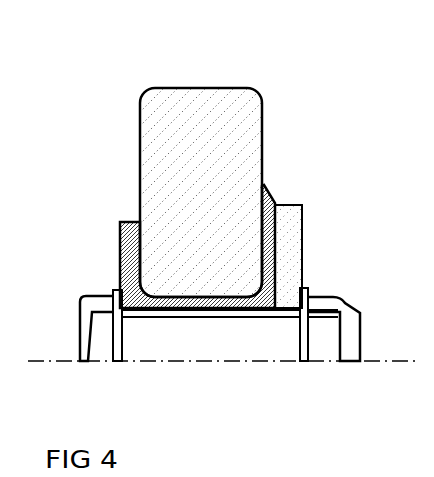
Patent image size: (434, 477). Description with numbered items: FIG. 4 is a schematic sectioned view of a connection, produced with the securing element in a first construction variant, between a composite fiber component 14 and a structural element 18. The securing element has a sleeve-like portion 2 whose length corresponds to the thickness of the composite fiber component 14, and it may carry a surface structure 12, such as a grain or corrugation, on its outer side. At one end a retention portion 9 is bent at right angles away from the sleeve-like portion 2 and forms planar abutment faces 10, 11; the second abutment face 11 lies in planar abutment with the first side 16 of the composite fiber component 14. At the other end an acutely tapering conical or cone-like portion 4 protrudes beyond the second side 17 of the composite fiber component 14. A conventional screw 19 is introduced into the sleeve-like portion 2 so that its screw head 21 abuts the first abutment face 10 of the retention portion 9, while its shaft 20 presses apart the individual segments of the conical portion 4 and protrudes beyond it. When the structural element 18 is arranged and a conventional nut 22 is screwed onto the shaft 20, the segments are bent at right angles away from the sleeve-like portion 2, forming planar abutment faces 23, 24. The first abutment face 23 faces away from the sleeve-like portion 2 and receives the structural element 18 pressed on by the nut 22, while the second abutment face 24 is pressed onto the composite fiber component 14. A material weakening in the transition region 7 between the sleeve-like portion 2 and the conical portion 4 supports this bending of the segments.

The sleeve-like portion 2 is at (192, 310).
The conical or cone-like portion 4 is at (273, 195).
The transition region 7 is at (260, 298).
The retention portion 9 is at (123, 221).
The first abutment face 10 is at (114, 277).
The second abutment face 11 is at (146, 252).
The surface structure 12 is at (168, 290).
The composite fiber component 14 is at (198, 97).
The first side 16 is at (146, 152).
The second side 17 is at (256, 152).
The structural element 18 is at (288, 250).
The screw 19 is at (185, 350).
The shaft 20 is at (243, 350).
The screw head 21 is at (97, 340).
The nut 22 is at (327, 333).
The first abutment face 23 is at (283, 258).
The second abutment face 24 is at (251, 230).